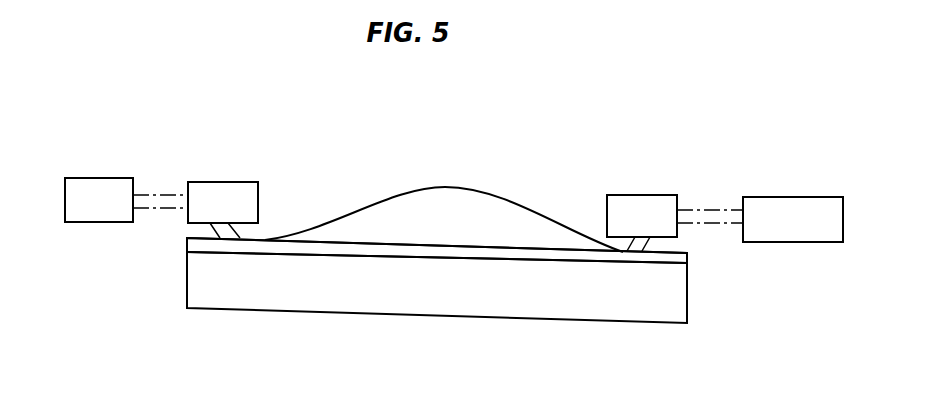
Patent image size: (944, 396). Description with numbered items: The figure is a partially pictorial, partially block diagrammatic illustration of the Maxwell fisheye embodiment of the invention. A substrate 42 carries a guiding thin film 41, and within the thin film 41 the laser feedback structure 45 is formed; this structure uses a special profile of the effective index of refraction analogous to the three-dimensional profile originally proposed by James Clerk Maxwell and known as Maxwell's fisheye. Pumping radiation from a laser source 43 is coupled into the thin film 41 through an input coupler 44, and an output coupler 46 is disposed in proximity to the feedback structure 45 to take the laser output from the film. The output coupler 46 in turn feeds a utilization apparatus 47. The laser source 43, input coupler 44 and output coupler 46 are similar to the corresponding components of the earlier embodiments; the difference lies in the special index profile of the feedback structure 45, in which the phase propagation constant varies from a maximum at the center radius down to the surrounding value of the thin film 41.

The guiding thin film 41 is at (268, 247).
The substrate 42 is at (422, 313).
The laser source 43 is at (103, 213).
The input coupler 44 is at (240, 182).
The laser feedback structure 45 is at (445, 185).
The output coupler 46 is at (653, 195).
The utilization apparatus 47 is at (778, 233).